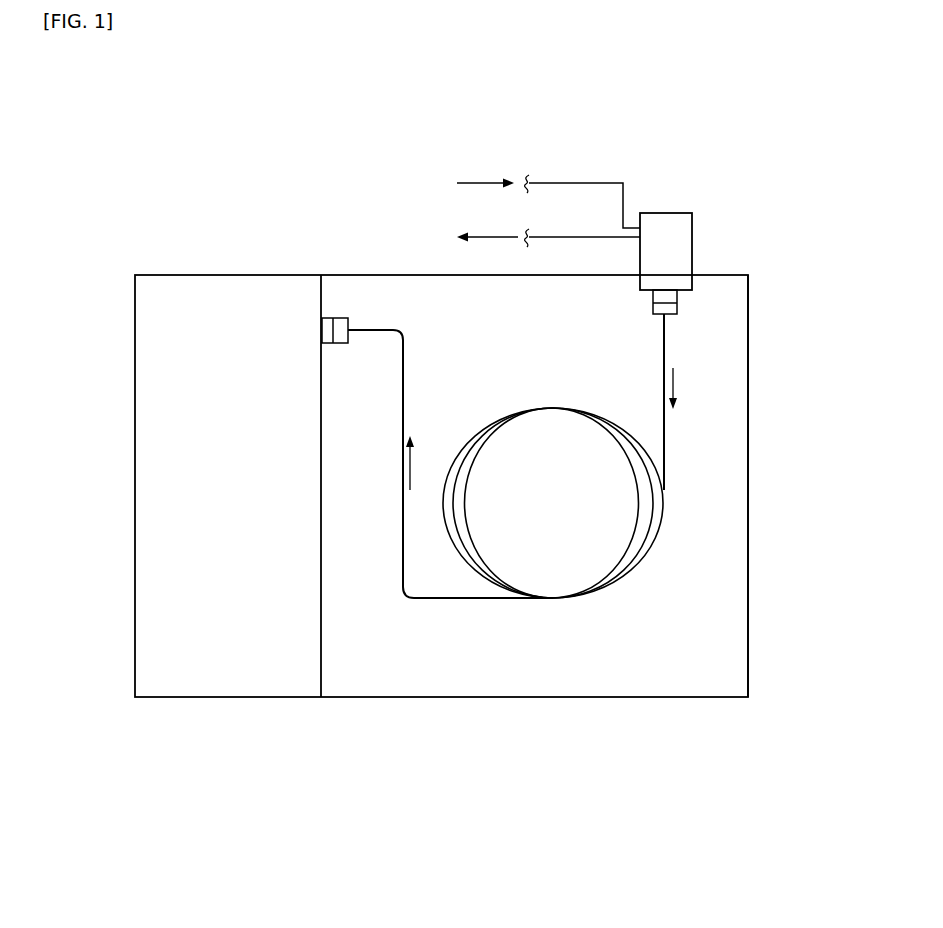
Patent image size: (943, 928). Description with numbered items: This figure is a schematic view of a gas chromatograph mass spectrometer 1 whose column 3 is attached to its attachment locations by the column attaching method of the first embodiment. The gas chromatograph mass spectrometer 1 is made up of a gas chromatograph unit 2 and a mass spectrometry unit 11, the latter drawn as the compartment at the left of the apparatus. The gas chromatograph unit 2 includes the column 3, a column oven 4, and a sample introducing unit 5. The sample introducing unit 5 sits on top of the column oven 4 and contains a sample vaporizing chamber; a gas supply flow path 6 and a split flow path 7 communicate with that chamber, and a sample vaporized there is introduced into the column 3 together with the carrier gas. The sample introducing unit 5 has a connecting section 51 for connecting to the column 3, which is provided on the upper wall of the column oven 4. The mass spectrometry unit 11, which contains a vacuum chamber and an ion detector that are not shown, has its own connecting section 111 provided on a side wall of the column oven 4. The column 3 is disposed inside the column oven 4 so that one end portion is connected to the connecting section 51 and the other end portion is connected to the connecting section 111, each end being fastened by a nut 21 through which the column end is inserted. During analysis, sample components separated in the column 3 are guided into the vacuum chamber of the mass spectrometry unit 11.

The gas chromatograph mass spectrometer 1 is at (690, 173).
The gas chromatograph unit 2 is at (569, 702).
The mass spectrometry unit 11 is at (205, 702).
The column oven 4 is at (748, 400).
The sample introducing unit 5 is at (697, 241).
The connecting section 51 is at (652, 292).
The gas supply flow path 6 is at (558, 182).
The split flow path 7 is at (562, 235).
The connecting section 111 is at (326, 344).
The nut 21 is at (341, 344).
The column 3 is at (553, 406).